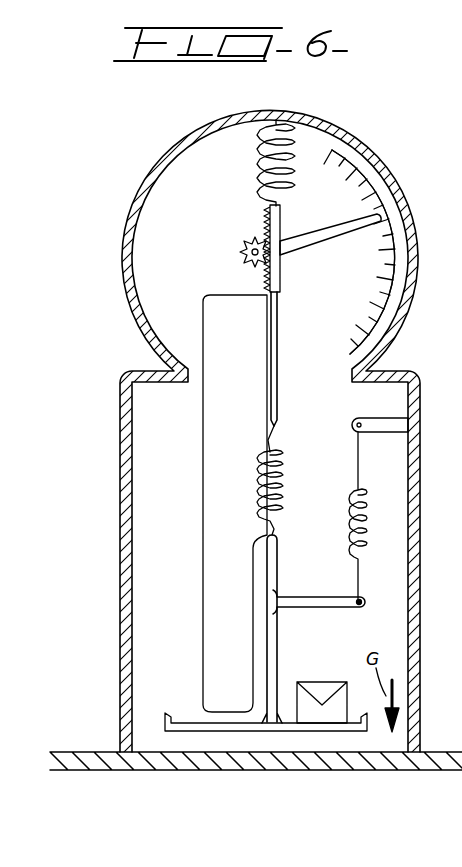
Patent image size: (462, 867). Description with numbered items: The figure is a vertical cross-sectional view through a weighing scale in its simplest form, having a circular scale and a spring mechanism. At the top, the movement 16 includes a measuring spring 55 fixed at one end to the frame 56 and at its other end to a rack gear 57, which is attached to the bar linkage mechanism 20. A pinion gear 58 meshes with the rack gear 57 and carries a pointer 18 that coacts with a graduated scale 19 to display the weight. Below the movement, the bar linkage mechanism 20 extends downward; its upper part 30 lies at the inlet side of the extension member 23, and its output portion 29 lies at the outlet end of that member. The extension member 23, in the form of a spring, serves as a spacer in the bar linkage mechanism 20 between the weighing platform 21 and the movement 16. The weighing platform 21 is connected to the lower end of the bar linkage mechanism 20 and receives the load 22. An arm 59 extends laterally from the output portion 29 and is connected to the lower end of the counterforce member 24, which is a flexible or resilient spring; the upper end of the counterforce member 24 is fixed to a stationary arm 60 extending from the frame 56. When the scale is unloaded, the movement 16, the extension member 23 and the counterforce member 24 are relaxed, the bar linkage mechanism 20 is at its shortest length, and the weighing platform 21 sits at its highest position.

The movement 16 is at (238, 224).
The pointer 18 is at (317, 233).
The graduated scale 19 is at (370, 182).
The bar linkage mechanism 20 is at (204, 460).
The weighing platform 21 is at (189, 718).
The load 22 is at (322, 687).
The extension member 23 is at (285, 472).
The counterforce member 24 is at (368, 521).
The output portion 29 is at (252, 615).
The upper part 30 is at (278, 346).
The measuring spring 55 is at (292, 163).
The frame 56 is at (312, 117).
The rack gear 57 is at (282, 262).
The pinion gear 58 is at (240, 262).
The arm 59 is at (308, 598).
The stationary arm 60 is at (380, 418).